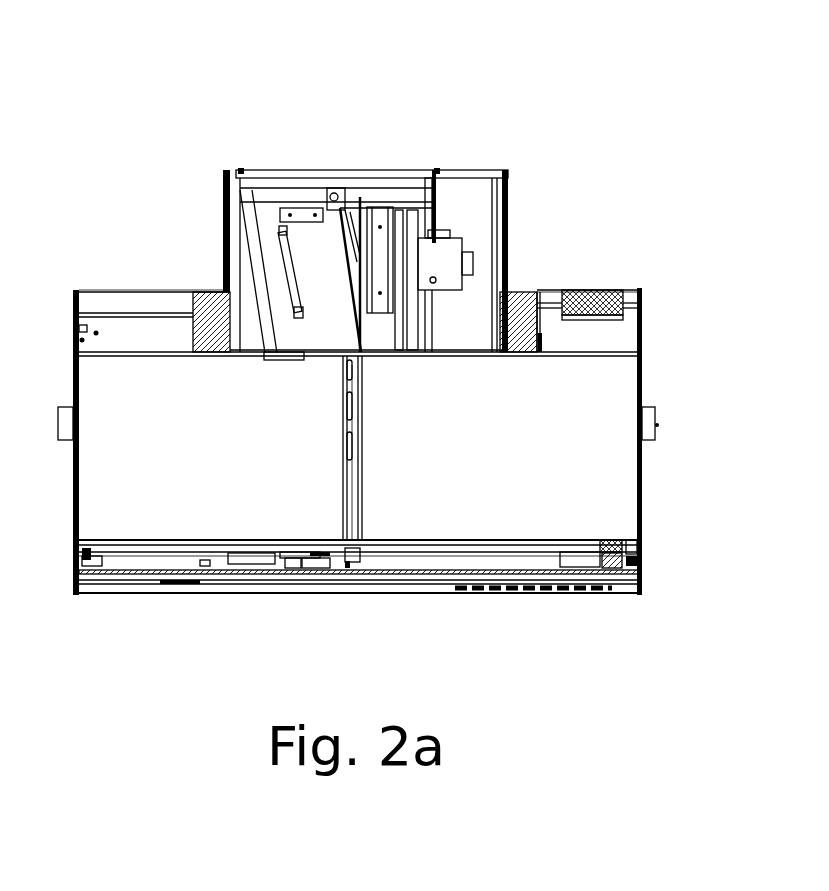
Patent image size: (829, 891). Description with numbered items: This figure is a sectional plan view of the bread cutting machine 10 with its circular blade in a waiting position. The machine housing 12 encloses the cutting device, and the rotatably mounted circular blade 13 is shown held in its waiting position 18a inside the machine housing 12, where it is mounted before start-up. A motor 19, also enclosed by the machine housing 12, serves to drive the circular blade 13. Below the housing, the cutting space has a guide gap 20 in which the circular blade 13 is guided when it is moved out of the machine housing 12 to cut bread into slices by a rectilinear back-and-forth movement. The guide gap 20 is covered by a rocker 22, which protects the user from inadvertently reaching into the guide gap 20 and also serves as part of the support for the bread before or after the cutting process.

The bread cutting machine 10 is at (558, 119).
The machine housing 12 is at (265, 172).
The circular blade 13 is at (300, 234).
The waiting position 18a is at (370, 326).
The motor 19 is at (445, 260).
The guide gap 20 is at (336, 453).
The rocker 22 is at (224, 192).